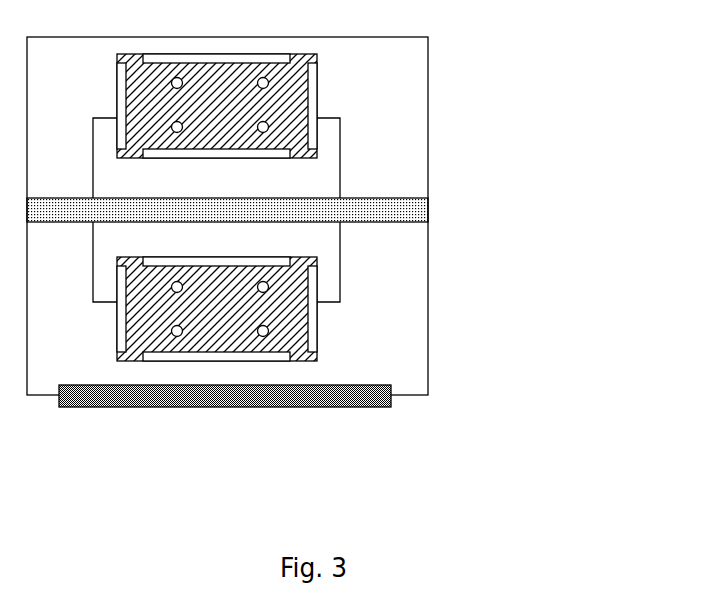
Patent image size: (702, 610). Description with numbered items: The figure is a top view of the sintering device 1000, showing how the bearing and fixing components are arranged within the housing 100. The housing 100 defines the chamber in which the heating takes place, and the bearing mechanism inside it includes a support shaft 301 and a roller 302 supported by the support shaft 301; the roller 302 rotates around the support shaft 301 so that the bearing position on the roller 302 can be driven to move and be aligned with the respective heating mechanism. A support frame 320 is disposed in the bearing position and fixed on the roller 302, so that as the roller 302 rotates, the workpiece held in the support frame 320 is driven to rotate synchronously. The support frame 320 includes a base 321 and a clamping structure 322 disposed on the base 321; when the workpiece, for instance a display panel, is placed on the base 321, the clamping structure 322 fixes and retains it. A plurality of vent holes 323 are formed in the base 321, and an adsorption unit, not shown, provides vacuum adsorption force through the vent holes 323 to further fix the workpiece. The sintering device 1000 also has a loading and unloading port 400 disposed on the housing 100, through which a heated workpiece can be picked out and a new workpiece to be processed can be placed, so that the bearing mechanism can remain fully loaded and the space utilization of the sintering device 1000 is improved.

The sintering device 1000 is at (312, 255).
The housing 100 is at (428, 326).
The support shaft 301 is at (385, 212).
The roller 302 is at (330, 254).
The support frame 320 is at (345, 99).
The base 321 is at (292, 62).
The clamping structure 322 is at (313, 92).
The vent hole 323 is at (266, 128).
The loading and unloading port 400 is at (284, 398).